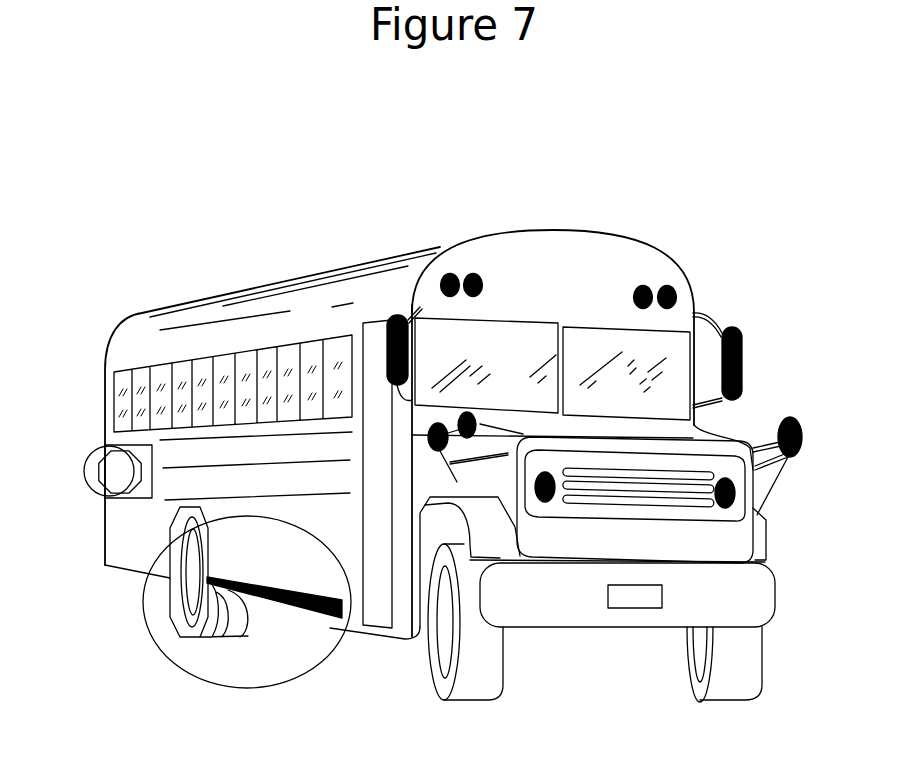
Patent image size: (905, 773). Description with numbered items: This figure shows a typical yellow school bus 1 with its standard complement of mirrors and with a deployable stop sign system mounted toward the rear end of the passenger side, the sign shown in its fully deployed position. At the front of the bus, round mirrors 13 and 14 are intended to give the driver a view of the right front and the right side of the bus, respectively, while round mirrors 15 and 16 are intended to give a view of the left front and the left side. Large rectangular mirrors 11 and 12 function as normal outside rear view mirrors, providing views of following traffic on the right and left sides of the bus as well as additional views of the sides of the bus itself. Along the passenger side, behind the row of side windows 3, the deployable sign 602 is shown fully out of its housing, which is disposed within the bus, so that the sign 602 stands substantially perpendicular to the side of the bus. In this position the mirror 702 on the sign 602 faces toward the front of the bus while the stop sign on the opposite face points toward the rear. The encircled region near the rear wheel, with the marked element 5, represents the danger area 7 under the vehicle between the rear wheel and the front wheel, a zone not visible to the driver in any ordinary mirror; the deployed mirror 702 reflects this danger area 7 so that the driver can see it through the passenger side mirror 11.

The school bus 1 is at (628, 259).
The passenger side windows 3 is at (290, 425).
The side-mounted sensor 5 is at (214, 574).
The danger zone 7 is at (297, 683).
The large rectangular mirror 11 is at (408, 346).
The large rectangular mirror 12 is at (745, 352).
The round mirror 13 is at (476, 412).
The round mirror 14 is at (447, 448).
The round mirror 15 is at (803, 432).
The round mirror 16 is at (800, 455).
The deployable sign 602 is at (96, 482).
The mirror 702 is at (109, 462).